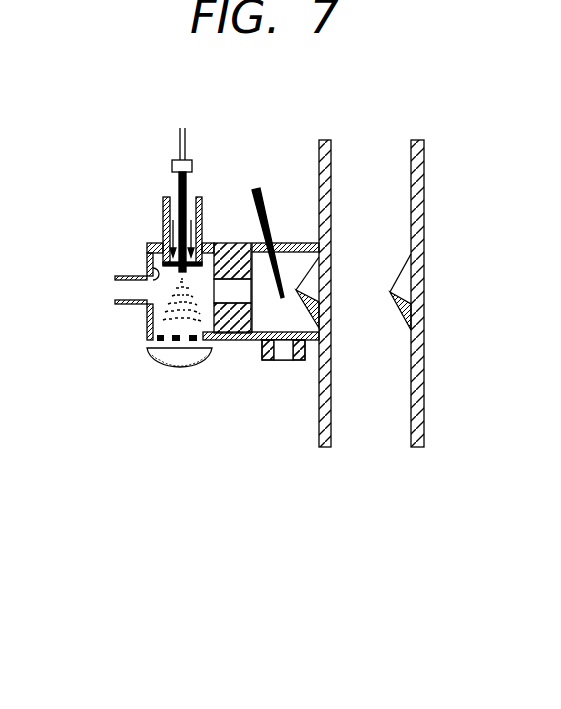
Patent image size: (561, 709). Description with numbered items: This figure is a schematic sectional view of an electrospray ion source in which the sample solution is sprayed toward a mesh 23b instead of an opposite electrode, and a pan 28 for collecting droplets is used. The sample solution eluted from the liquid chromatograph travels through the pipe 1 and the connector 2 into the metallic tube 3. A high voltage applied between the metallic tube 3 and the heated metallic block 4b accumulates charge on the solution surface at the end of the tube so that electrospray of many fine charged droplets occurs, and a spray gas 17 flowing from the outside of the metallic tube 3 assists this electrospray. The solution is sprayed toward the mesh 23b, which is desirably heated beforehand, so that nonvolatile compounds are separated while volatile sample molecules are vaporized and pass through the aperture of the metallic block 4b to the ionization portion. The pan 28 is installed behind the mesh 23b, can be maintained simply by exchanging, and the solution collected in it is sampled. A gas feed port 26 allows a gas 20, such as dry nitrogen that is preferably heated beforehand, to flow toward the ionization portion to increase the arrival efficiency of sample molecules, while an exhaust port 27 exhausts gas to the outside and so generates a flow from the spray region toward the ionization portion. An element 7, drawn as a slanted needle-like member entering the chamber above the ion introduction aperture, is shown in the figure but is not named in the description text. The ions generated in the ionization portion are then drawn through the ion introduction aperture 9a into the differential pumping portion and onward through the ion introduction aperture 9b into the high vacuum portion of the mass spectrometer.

The pipe 1 is at (178, 142).
The connector 2 is at (192, 162).
The metallic tube 3 is at (186, 191).
The spray gas 17 is at (171, 227).
The gas feed port 26 is at (148, 270).
The gas 20 is at (130, 289).
The mesh 23b is at (157, 338).
The pan 28 is at (179, 368).
The metallic block 4b is at (228, 341).
The exhaust port 27 is at (277, 361).
The needle 7 is at (266, 202).
The ion introduction aperture 9a is at (296, 291).
The ion introduction aperture 9b is at (390, 293).